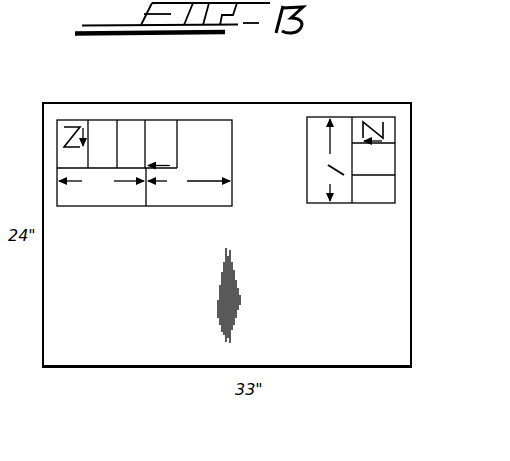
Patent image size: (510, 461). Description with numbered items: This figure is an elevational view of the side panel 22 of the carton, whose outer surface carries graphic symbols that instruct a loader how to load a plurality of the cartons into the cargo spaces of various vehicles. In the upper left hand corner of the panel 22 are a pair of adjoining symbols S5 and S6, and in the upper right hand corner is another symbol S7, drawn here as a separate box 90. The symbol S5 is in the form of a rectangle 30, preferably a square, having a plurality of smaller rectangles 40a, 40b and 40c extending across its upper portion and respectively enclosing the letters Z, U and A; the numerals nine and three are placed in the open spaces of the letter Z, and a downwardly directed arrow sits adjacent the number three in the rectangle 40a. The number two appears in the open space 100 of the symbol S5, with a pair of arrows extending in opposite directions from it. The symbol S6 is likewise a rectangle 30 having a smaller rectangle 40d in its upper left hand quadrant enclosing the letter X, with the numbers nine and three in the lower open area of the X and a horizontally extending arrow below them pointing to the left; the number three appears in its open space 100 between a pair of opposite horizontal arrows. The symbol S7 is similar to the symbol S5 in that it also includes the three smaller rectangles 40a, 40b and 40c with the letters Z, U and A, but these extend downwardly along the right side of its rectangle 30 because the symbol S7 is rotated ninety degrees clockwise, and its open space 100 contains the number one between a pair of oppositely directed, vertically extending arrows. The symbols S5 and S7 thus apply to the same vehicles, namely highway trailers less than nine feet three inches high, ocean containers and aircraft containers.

The side panel 22 is at (304, 327).
The open space 100 is at (219, 143).
The rectangle 30 is at (115, 208).
The auxiliary display box 90 is at (307, 128).
The smaller rectangle 40a is at (73, 119).
The smaller rectangle 40b is at (108, 119).
The smaller rectangle 40c is at (131, 119).
The smaller rectangle 40d is at (163, 119).
The symbol S5 is at (101, 224).
The symbol S6 is at (173, 224).
The symbol S7 is at (301, 148).